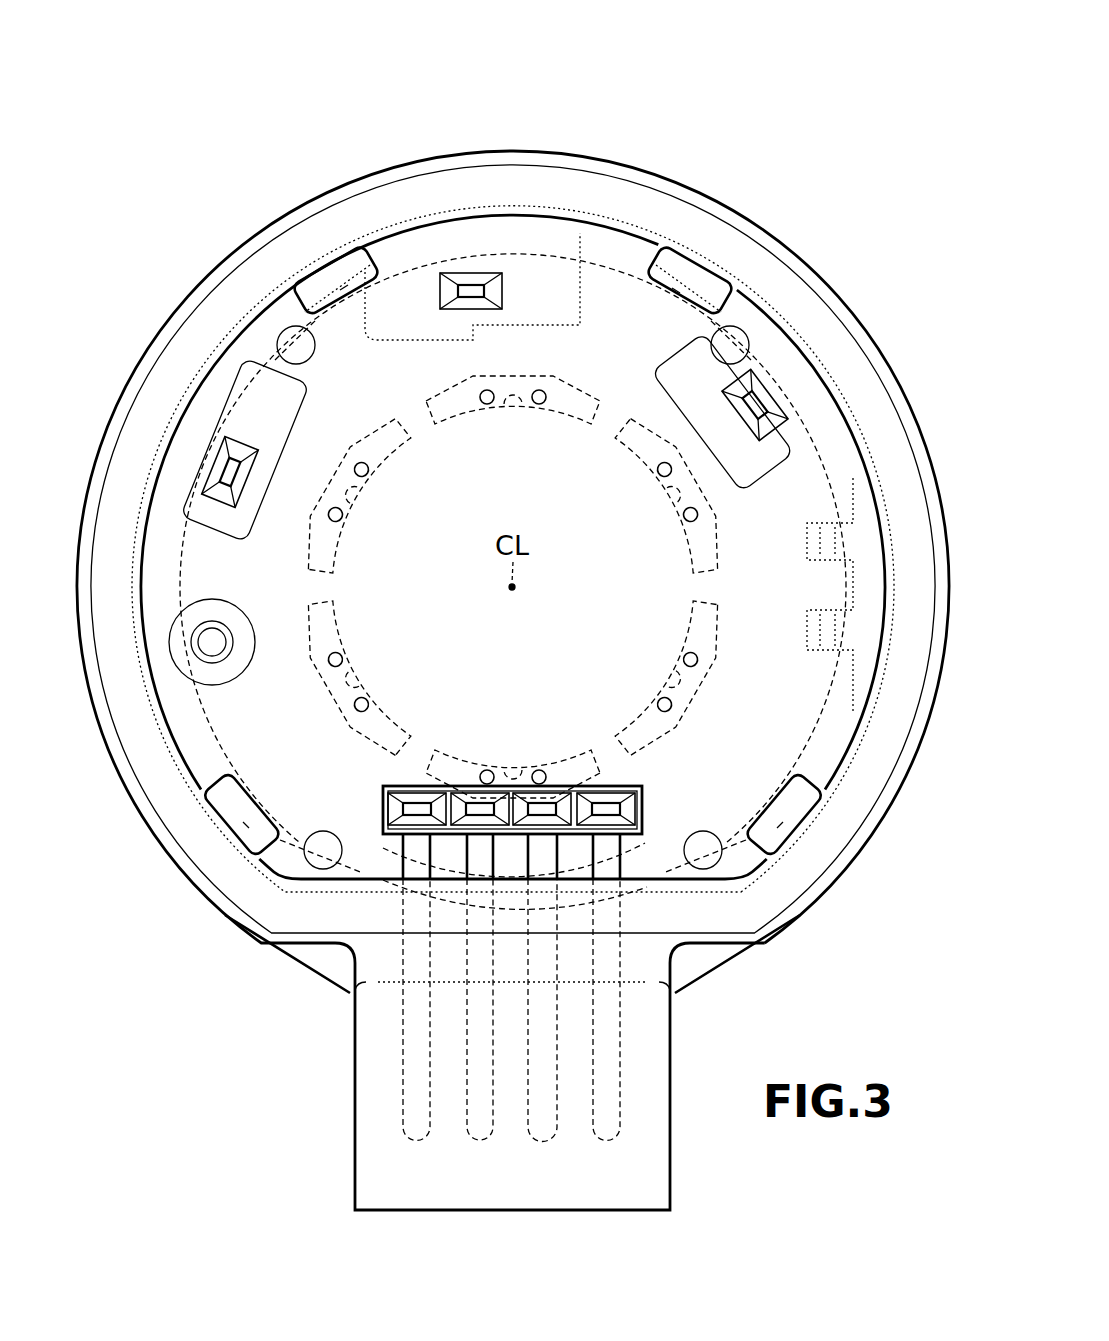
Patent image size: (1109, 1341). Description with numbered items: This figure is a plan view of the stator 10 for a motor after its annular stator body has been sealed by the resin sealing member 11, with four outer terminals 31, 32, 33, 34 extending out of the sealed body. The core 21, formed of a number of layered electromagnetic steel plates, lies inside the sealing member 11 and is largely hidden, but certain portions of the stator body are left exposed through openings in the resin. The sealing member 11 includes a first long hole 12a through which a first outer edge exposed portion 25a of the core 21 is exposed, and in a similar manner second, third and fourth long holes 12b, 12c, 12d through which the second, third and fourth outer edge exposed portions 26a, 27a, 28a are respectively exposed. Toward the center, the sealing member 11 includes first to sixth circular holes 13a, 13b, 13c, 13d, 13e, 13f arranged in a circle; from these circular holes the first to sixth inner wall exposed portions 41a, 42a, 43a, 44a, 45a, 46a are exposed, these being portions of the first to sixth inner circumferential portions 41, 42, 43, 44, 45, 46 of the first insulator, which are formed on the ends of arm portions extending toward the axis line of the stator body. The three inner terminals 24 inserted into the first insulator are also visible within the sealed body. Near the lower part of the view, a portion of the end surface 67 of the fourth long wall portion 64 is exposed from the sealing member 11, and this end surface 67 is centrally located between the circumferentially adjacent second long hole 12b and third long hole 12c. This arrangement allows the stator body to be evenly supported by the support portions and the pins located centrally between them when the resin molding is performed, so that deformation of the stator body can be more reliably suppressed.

The stator 10 is at (858, 84).
The sealing member 11 is at (172, 285).
The first long hole 12a is at (702, 318).
The second long hole 12b is at (764, 843).
The third long hole 12c is at (262, 843).
The fourth long hole 12d is at (317, 308).
The first circular holes 13a is at (537, 390).
The second circular holes 13b is at (690, 506).
The third circular holes 13c is at (667, 700).
The fourth circular holes 13d is at (542, 770).
The fifth circular holes 13e is at (355, 700).
The sixth circular holes 13f is at (335, 506).
The core 21 is at (544, 252).
The inner terminals 24 is at (472, 280).
The first outer edge exposed portion 25a is at (672, 288).
The second outer edge exposed portion 26a is at (783, 822).
The third outer edge exposed portion 27a is at (243, 822).
The fourth outer edge exposed portion 28a is at (346, 283).
The outer terminal 31 is at (416, 1147).
The outer terminal 32 is at (480, 1147).
The outer terminal 33 is at (542, 1147).
The outer terminal 34 is at (606, 1147).
The first inner circumferential portion 41 is at (568, 405).
The first inner wall exposed portion 41a is at (535, 404).
The second inner circumferential portion 42 is at (688, 543).
The second inner wall exposed portion 42a is at (683, 514).
The third inner circumferential portion 43 is at (637, 722).
The third inner wall exposed portion 43a is at (663, 698).
The fourth inner circumferential portion 44 is at (458, 762).
The fourth inner wall exposed portion 44a is at (536, 770).
The fifth inner circumferential portion 45 is at (327, 628).
The fifth inner wall exposed portion 45a is at (340, 668).
The sixth inner circumferential portion 46 is at (383, 450).
The sixth inner wall exposed portion 46a is at (338, 518).
The fourth long wall portion 64 is at (516, 913).
The end surface 67 is at (580, 873).